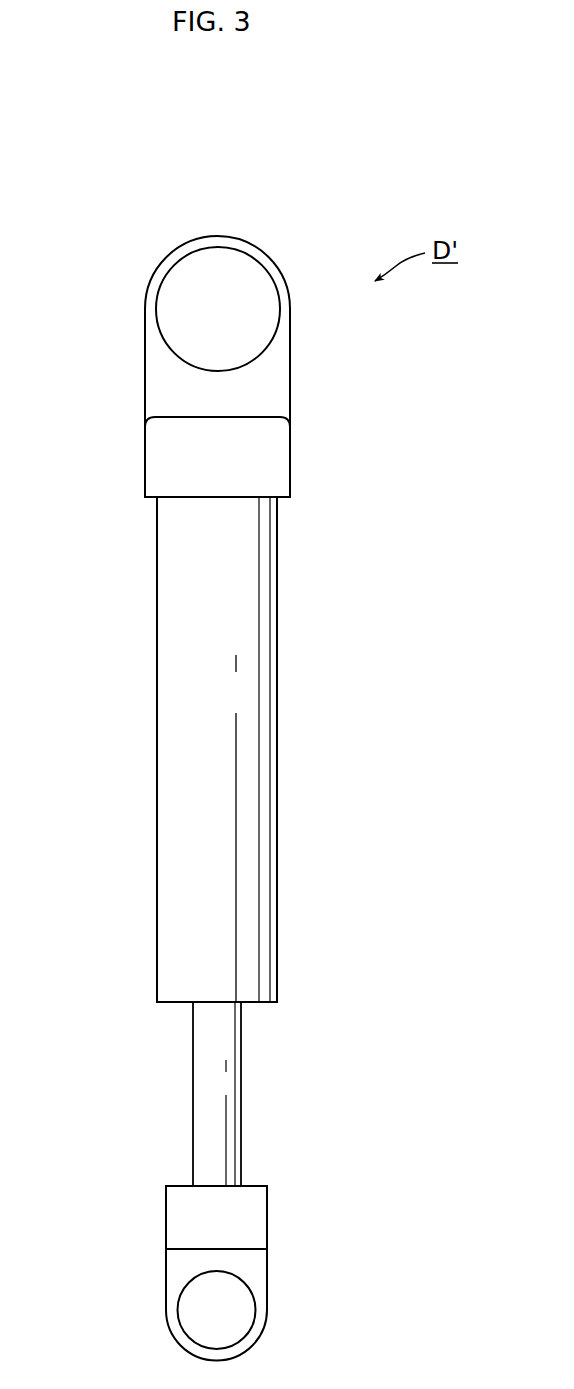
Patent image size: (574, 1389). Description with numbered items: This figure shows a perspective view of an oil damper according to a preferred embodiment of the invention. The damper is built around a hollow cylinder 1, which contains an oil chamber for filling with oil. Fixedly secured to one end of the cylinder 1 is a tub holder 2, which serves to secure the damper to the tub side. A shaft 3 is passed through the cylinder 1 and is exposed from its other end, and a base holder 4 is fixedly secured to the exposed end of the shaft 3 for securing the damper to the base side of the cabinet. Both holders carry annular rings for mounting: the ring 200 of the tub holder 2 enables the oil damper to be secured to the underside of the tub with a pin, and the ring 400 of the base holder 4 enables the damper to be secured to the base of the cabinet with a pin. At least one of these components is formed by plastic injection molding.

The hollow cylinder 1 is at (157, 782).
The tub holder 2 is at (142, 384).
The shaft 3 is at (193, 1100).
The base holder 4 is at (163, 1236).
The annular ring 200 is at (152, 292).
The ring 400 is at (263, 1323).